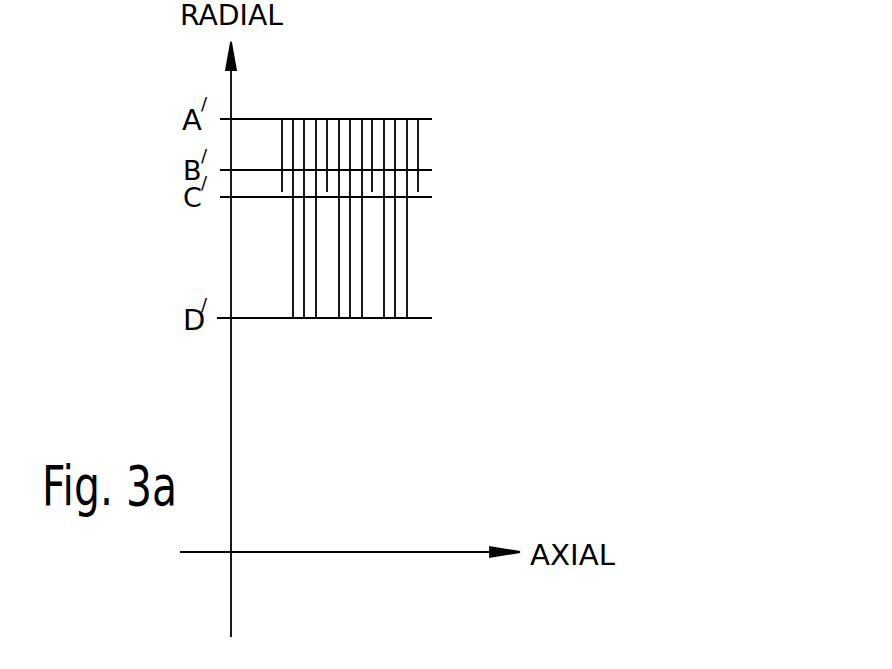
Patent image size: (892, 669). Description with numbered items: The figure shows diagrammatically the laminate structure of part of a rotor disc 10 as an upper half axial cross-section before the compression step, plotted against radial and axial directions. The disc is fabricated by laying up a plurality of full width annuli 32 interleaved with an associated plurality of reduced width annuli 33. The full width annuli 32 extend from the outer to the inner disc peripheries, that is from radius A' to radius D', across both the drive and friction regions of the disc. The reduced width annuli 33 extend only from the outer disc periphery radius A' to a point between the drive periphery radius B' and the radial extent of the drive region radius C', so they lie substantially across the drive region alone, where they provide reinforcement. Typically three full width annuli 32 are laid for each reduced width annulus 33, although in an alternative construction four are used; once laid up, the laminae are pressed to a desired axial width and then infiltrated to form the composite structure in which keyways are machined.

The rotor disc 10 is at (389, 237).
The full width annuli 32 is at (397, 322).
The reduced width annuli 33 is at (282, 133).